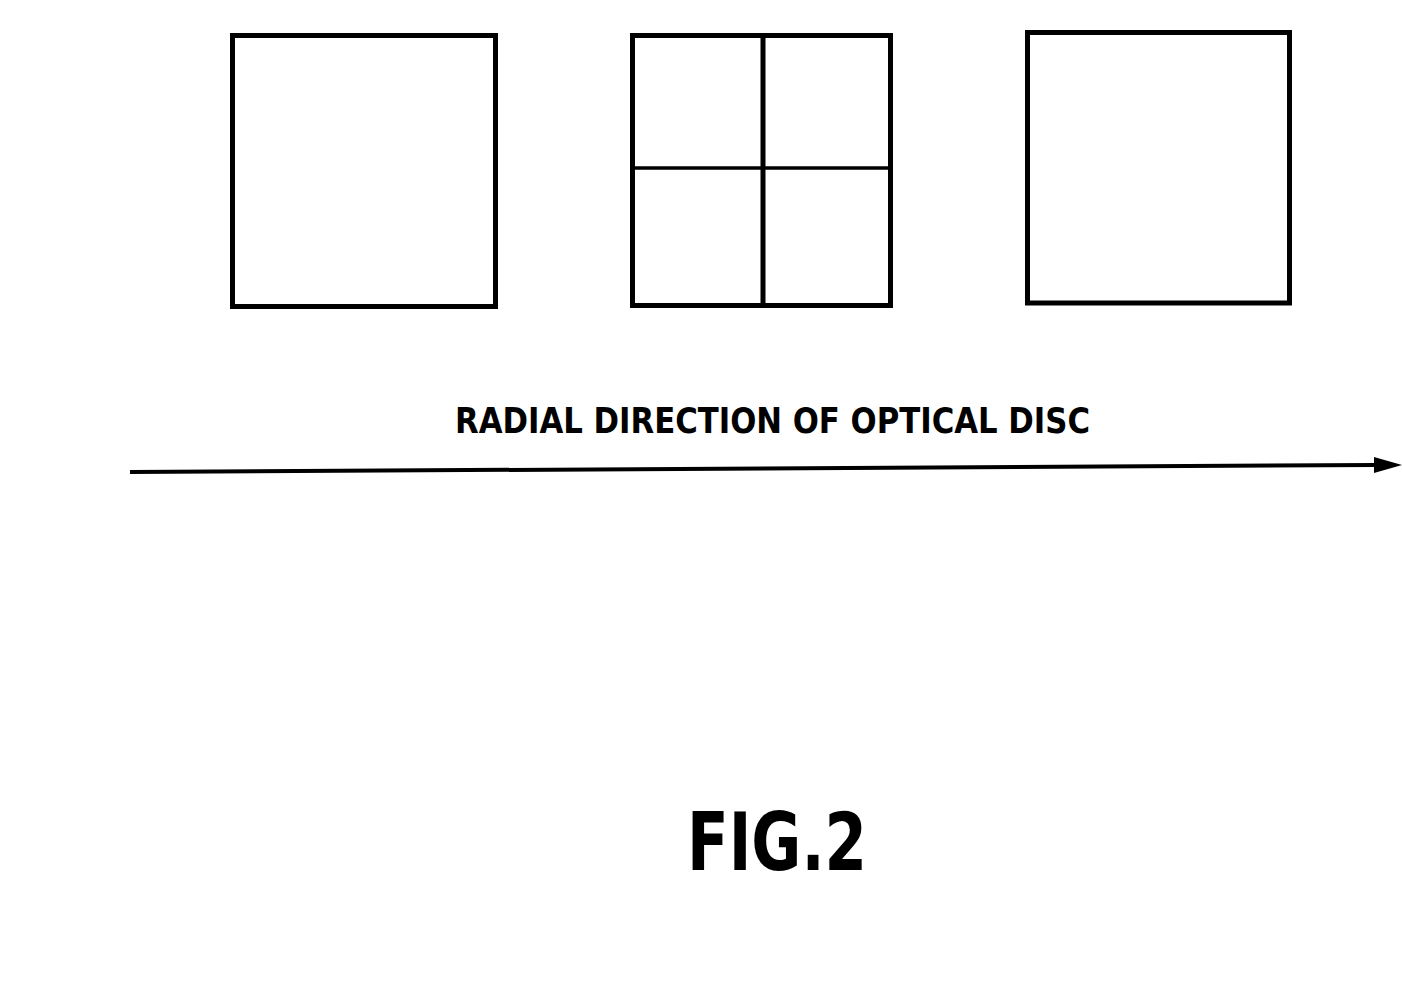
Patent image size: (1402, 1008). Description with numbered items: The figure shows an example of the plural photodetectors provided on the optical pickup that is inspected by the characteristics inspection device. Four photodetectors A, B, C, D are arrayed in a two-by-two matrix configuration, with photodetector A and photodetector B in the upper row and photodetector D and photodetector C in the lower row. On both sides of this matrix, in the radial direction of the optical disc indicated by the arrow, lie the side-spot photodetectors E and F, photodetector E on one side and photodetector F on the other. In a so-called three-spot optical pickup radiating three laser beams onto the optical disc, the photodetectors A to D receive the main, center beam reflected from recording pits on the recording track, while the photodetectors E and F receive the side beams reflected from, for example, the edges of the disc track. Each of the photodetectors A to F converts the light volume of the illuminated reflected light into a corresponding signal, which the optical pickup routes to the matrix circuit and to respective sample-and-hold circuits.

The photodetector A is at (698, 102).
The photodetector B is at (827, 102).
The photodetector C is at (827, 237).
The photodetector D is at (698, 237).
The photodetector E is at (364, 171).
The photodetector F is at (1159, 168).